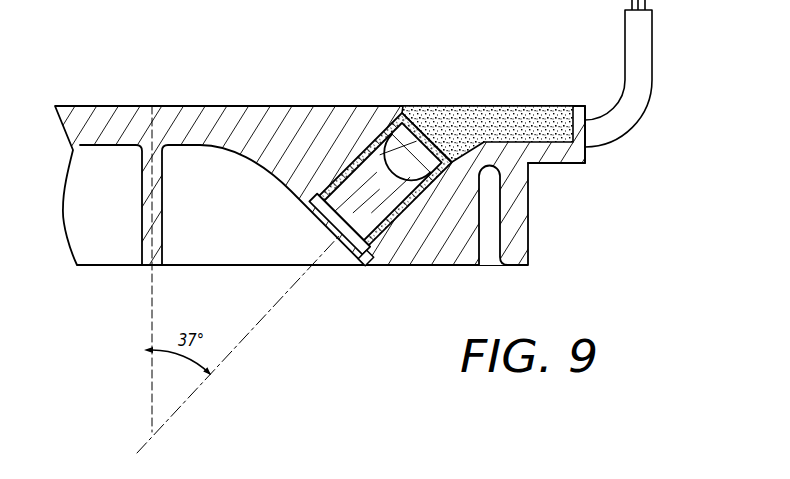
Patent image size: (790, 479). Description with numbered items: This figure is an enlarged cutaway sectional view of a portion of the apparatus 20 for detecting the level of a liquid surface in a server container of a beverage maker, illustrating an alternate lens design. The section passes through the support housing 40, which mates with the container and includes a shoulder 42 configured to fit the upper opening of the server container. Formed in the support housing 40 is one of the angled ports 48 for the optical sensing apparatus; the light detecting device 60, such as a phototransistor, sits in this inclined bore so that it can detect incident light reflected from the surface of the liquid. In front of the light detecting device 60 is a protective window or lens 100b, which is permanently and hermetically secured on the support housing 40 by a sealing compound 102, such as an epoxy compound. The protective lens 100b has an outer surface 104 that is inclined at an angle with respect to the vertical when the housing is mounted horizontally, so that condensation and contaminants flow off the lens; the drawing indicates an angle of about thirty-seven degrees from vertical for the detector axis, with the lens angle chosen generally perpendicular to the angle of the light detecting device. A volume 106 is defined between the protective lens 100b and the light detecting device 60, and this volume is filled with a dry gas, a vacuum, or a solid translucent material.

The apparatus for detecting a level of a surface of a liquid 20 is at (625, 215).
The support housing 40 is at (242, 106).
The shoulder 42 is at (557, 165).
The angled ports 48 is at (474, 185).
The light detecting device 60 is at (425, 123).
The protective window or lens 100b is at (345, 247).
The sealing compound 102 is at (490, 127).
The outer surface 104 is at (323, 227).
The volume 106 is at (368, 224).